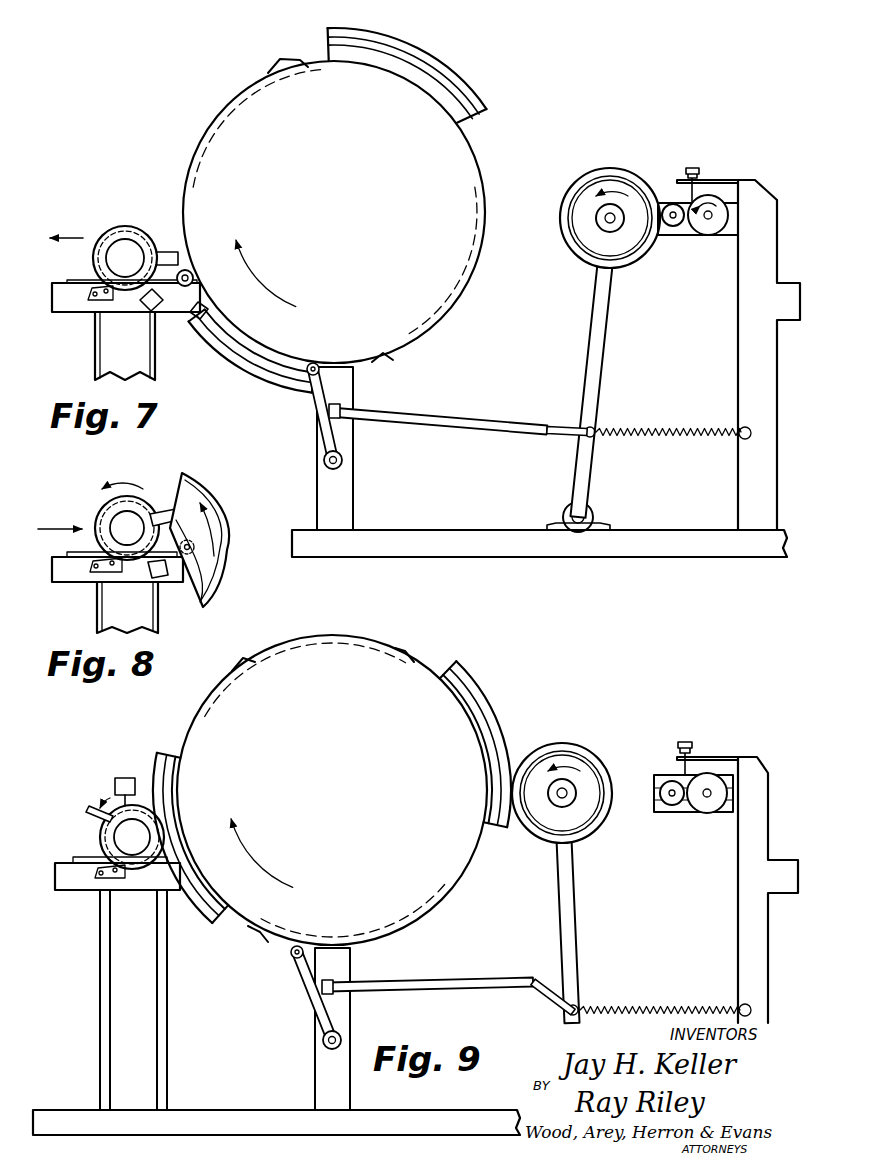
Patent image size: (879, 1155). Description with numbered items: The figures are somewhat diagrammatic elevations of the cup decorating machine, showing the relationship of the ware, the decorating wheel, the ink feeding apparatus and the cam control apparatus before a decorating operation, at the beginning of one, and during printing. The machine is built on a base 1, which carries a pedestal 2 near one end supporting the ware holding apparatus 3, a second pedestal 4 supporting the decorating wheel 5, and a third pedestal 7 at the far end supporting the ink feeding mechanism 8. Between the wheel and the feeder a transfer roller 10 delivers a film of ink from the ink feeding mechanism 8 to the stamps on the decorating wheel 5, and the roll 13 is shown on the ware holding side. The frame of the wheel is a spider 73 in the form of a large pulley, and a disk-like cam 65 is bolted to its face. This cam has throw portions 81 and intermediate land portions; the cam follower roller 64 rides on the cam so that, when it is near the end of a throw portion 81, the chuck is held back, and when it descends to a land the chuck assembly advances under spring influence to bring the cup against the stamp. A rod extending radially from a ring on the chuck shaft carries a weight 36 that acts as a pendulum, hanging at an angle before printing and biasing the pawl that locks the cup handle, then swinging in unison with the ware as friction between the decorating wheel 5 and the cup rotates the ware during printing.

In FIG. 7, the base 1 is at (590, 552).
In FIG. 9, the base 1 is at (253, 1100).
In FIG. 7, the pedestal 2 is at (105, 347).
In FIG. 8, the pedestal 2 is at (108, 613).
In FIG. 9, the pedestal 2 is at (108, 987).
In FIG. 7, the ware holding apparatus 3 is at (86, 281).
In FIG. 8, the ware holding apparatus 3 is at (55, 573).
In FIG. 9, the ware holding apparatus 3 is at (56, 881).
In FIG. 7, the second pedestal 4 is at (354, 496).
In FIG. 9, the second pedestal 4 is at (352, 1082).
In FIG. 7, the decorating wheel 5 is at (454, 156).
In FIG. 8, the decorating wheel 5 is at (204, 489).
In FIG. 9, the decorating wheel 5 is at (414, 682).
In FIG. 7, the third pedestal 7 is at (777, 355).
In FIG. 9, the third pedestal 7 is at (769, 921).
In FIG. 7, the ink feeding mechanism 8 is at (712, 195).
In FIG. 9, the ink feeding mechanism 8 is at (712, 770).
In FIG. 7, the transfer roller 10 is at (632, 185).
In FIG. 9, the transfer roller 10 is at (590, 762).
In FIG. 7, the roll 13 is at (150, 242).
In FIG. 7, the weight 36 is at (160, 308).
In FIG. 8, the weight 36 is at (165, 578).
In FIG. 9, the weight 36 is at (130, 778).
In FIG. 7, the cam follower roller 64 is at (191, 271).
In FIG. 8, the cam follower roller 64 is at (198, 552).
In FIG. 7, the cam 65 is at (292, 62).
In FIG. 7, the spider 73 is at (232, 348).
In FIG. 7, the throw portion 81 is at (198, 320).